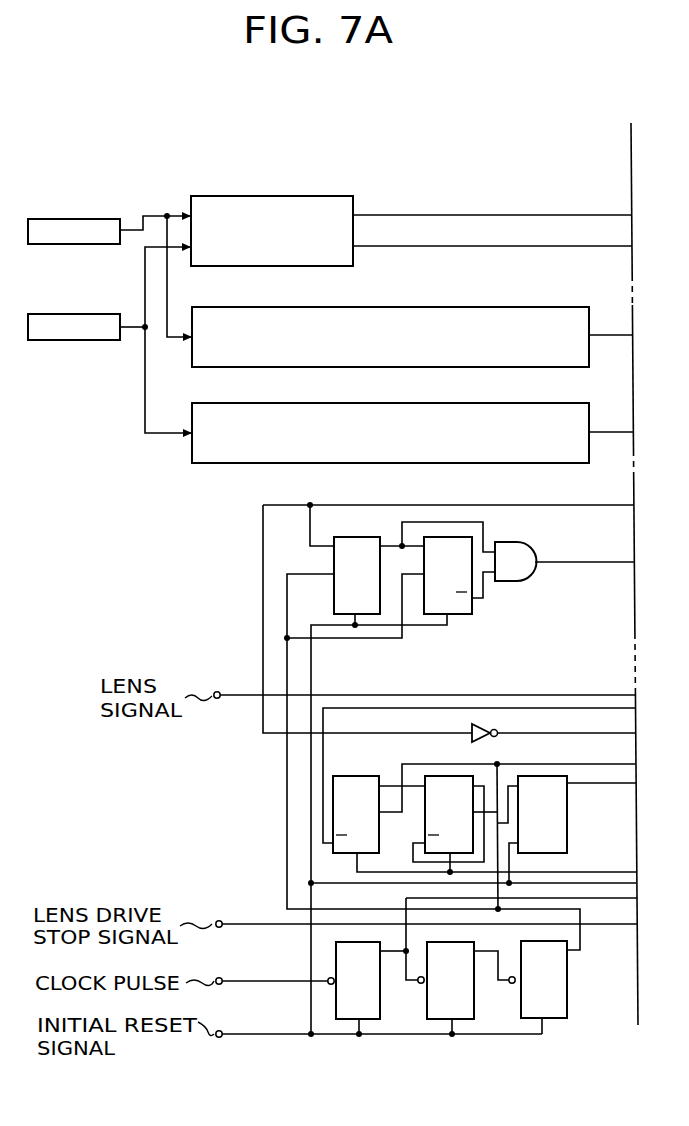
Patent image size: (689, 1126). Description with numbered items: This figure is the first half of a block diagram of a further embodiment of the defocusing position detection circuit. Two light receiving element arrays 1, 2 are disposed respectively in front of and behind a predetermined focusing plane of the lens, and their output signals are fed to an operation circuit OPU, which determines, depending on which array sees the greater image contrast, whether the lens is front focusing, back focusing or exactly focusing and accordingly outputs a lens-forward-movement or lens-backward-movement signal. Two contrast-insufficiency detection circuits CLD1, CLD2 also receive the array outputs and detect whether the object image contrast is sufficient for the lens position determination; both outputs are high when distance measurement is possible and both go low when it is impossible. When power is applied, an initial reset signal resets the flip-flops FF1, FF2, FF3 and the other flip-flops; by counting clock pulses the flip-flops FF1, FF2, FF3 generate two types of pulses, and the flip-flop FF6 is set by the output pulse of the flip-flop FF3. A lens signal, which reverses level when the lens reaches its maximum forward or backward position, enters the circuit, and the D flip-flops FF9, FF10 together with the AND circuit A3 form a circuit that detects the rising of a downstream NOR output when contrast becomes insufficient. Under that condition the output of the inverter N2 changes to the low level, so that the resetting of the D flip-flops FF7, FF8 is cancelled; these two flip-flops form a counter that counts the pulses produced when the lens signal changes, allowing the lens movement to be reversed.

The light receiving element array 1 is at (58, 219).
The light receiving element array 2 is at (62, 314).
The operation circuit OPU is at (283, 196).
The contrast-insufficiency detection circuit CLD1 is at (492, 307).
The contrast-insufficiency detection circuit CLD2 is at (492, 403).
The D flip-flop FF10 is at (343, 537).
The D flip-flop FF9 is at (468, 614).
The AND circuit A3 is at (529, 576).
The inverter N2 is at (470, 728).
The D flip-flop FF8 is at (358, 767).
The D flip-flop FF7 is at (452, 776).
The flip-flop FF6 is at (540, 776).
The flip-flop FF1 is at (380, 990).
The flip-flop FF2 is at (474, 990).
The flip-flop FF3 is at (567, 990).